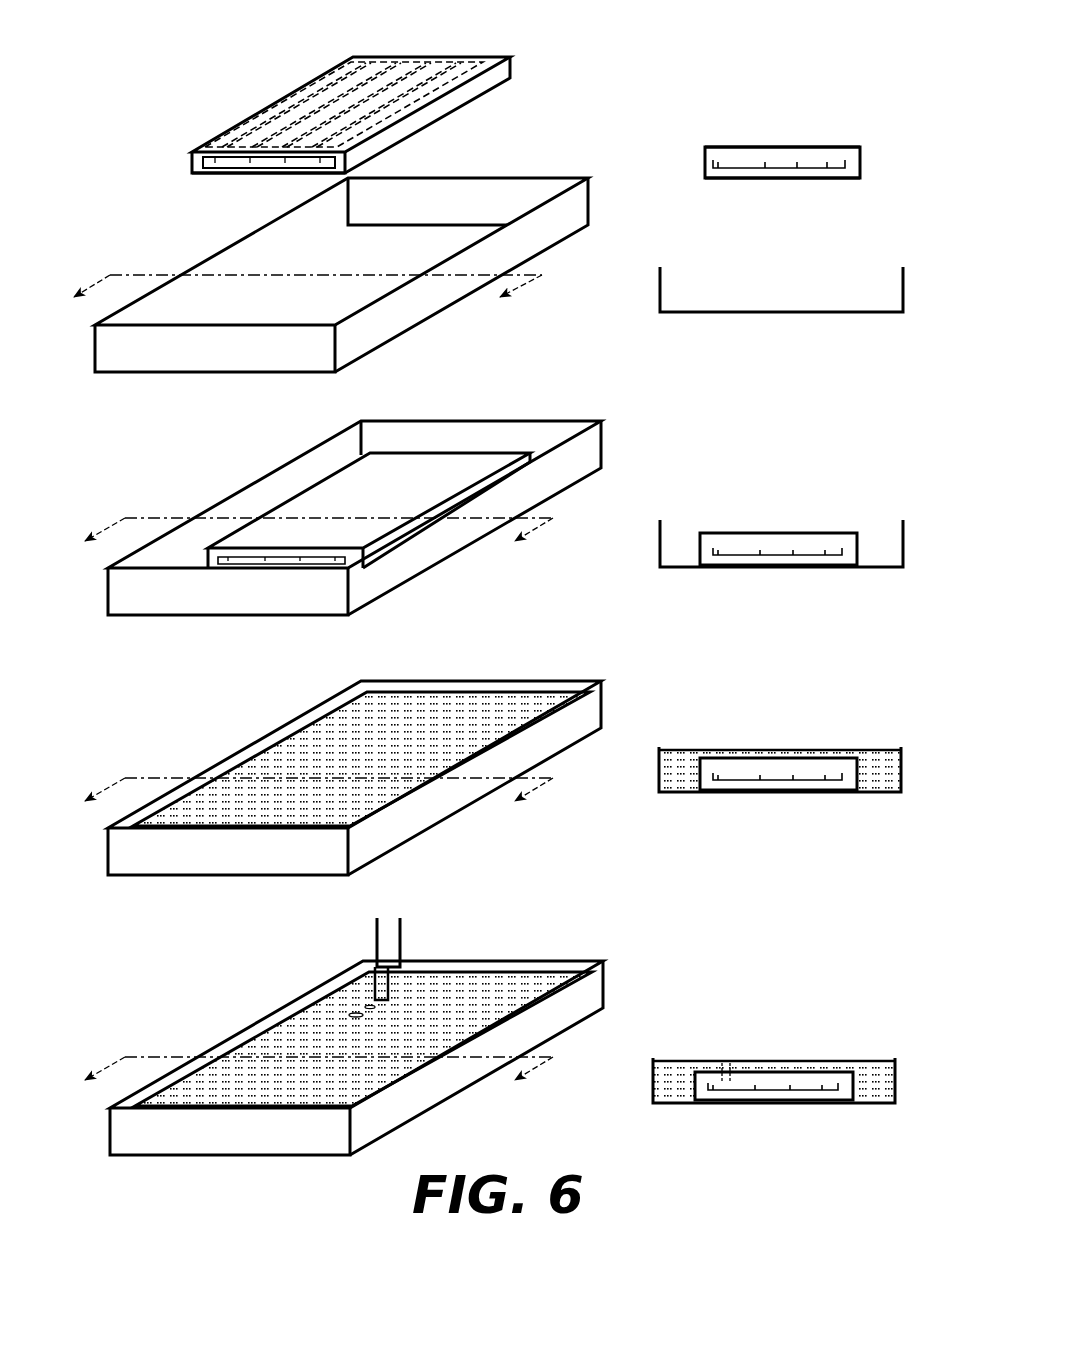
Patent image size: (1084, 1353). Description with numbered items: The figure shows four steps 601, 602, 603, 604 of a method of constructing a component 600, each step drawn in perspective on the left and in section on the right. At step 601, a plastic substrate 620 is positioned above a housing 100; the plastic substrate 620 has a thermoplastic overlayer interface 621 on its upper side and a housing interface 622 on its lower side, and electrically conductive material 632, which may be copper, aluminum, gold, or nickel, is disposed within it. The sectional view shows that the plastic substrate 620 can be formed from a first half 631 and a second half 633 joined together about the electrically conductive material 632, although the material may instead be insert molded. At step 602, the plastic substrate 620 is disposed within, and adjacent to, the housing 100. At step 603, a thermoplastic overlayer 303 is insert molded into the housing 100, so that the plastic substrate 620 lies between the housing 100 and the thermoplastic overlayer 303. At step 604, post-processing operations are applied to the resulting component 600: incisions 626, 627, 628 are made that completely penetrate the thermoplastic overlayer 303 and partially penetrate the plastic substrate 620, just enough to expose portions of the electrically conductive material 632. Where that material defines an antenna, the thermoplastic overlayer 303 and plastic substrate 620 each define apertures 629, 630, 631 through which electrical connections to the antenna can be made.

The housing 100 is at (432, 295).
The thermoplastic overlayer 303 is at (670, 1082).
The component 600 is at (484, 1102).
The step 601 is at (83, 175).
The step 602 is at (90, 436).
The step 603 is at (83, 705).
The step 604 is at (91, 976).
The plastic substrate 620 is at (468, 98).
The thermoplastic overlayer interface 621 is at (278, 110).
The housing interface 622 is at (237, 175).
The incision 626 is at (343, 1012).
The incision 627 is at (368, 1003).
The incision 628 is at (373, 968).
The aperture 629 is at (407, 993).
The aperture 630 is at (387, 1008).
The first half 631 is at (810, 155).
The electrically conductive material 632 is at (203, 160).
The second half 633 is at (797, 173).